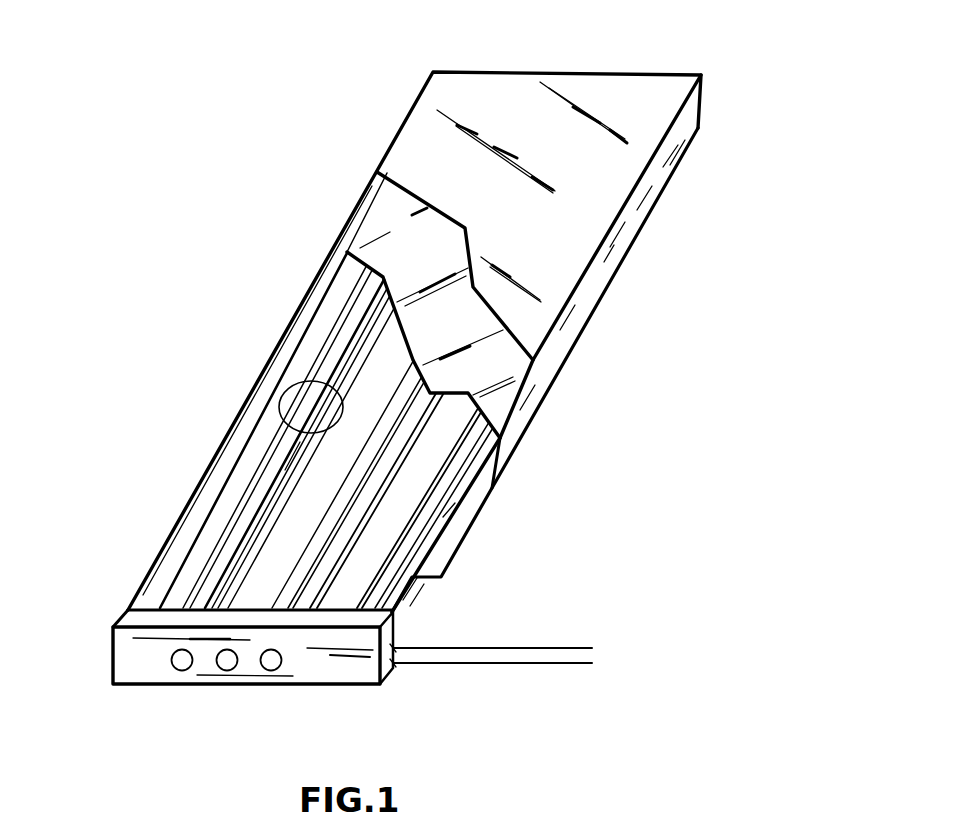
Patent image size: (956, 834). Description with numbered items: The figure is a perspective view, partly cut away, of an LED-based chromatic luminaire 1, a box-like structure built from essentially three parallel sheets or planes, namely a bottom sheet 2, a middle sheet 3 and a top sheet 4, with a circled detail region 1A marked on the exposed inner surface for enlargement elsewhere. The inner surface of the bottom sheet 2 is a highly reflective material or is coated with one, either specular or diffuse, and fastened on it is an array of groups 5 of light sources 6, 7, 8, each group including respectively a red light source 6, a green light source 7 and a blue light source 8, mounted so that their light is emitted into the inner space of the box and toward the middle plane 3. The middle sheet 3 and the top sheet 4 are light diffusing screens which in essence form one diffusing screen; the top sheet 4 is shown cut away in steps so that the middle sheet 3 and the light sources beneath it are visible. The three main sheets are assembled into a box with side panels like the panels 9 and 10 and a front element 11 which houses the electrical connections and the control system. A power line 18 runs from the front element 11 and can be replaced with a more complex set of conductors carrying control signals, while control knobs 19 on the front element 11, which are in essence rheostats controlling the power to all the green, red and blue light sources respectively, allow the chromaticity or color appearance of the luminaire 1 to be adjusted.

The luminaire 1 is at (500, 54).
The detail region 1A is at (285, 388).
The bottom sheet 2 is at (230, 497).
The middle sheet 3 is at (390, 232).
The top sheet 4 is at (615, 173).
The group of light sources 5 is at (298, 366).
The red light source 6 is at (228, 532).
The green light source 7 is at (260, 508).
The blue light source 8 is at (267, 540).
The side panel 9 is at (628, 258).
The side panel 10 is at (237, 425).
The front element 11 is at (128, 660).
The power line 18 is at (530, 660).
The control knobs 19 is at (265, 669).